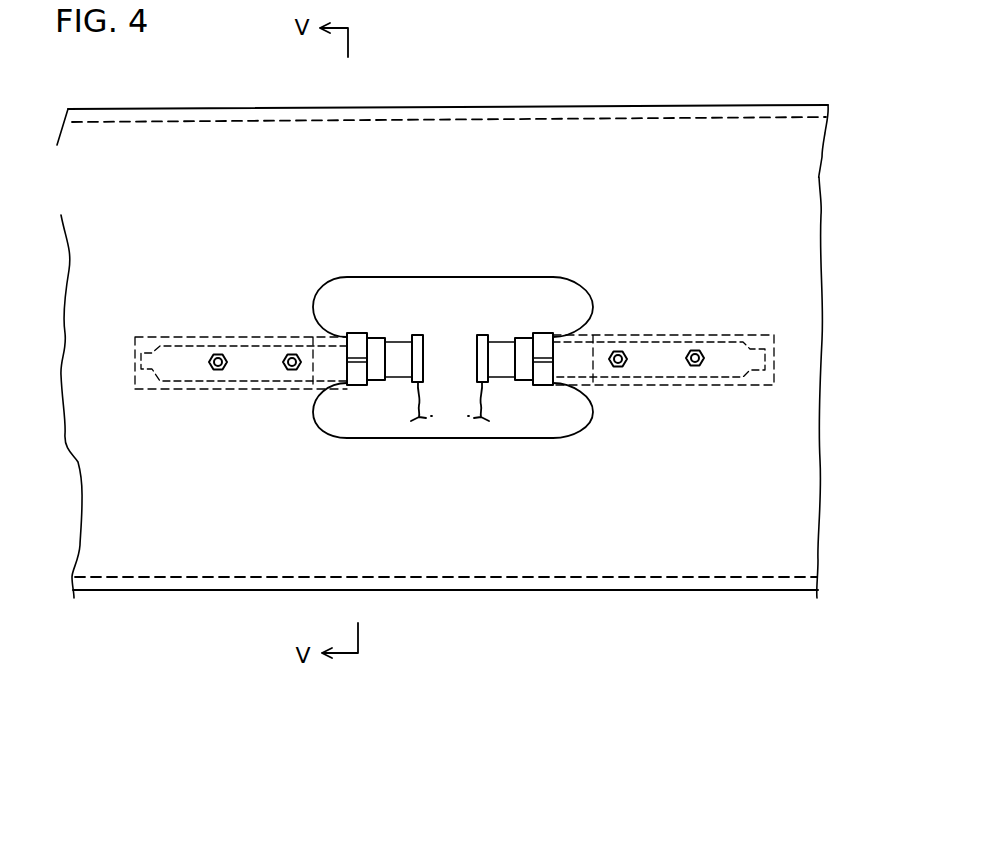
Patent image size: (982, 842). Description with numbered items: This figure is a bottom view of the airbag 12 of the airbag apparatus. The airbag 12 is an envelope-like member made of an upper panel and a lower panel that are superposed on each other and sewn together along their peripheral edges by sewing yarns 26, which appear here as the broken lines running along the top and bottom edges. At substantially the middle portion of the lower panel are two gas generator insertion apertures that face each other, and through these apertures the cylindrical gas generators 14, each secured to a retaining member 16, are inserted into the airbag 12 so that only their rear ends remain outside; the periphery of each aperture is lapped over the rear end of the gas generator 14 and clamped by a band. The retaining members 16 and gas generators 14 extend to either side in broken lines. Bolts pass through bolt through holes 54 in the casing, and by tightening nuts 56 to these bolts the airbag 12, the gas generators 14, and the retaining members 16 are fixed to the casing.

The airbag 12 is at (615, 107).
The gas generator 14 is at (247, 370).
The retaining member 16 is at (178, 337).
The sewing yarn 26 is at (350, 117).
The bolt through hole 54 is at (290, 352).
The nut 56 is at (222, 371).